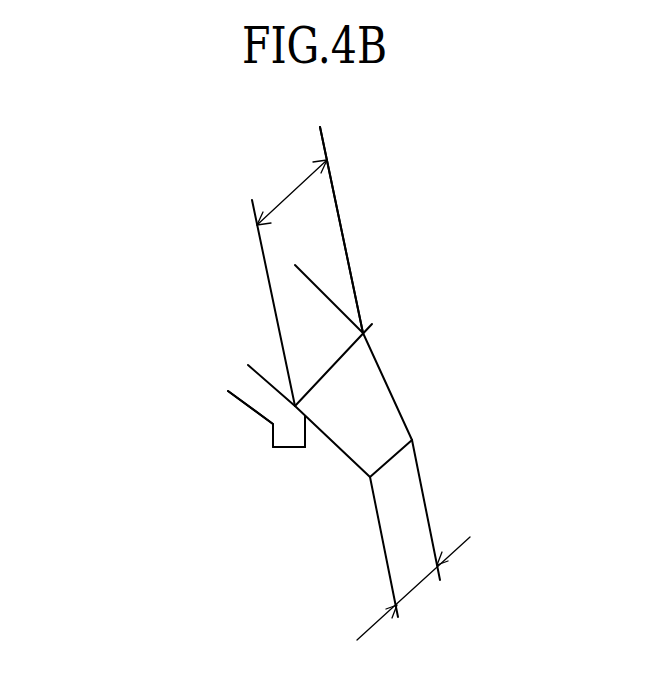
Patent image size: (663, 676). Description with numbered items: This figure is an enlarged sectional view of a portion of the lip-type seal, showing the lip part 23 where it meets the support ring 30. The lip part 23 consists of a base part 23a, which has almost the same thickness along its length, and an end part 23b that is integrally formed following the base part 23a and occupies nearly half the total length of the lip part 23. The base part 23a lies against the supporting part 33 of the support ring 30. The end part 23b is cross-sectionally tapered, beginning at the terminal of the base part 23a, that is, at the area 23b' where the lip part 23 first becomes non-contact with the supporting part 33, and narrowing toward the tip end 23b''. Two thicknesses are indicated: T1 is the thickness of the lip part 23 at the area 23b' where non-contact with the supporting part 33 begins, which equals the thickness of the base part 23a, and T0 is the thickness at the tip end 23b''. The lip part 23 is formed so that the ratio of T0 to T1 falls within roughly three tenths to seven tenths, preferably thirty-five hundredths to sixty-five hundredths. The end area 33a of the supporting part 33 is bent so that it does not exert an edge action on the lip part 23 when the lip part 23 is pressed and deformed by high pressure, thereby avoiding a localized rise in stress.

The lip part 23 is at (384, 372).
The base part 23a is at (320, 313).
The end part 23b is at (439, 386).
The area that begins non-contact with the supporting part 23b' is at (250, 438).
The tip end 23b'' is at (355, 507).
The support ring 30 is at (248, 483).
The supporting part 33 is at (264, 422).
The end area of the supporting part 33a is at (304, 416).
The thickness of the area that begins non-contact with the supporting part T1 is at (292, 190).
The thickness of the tip end T0 is at (413, 588).